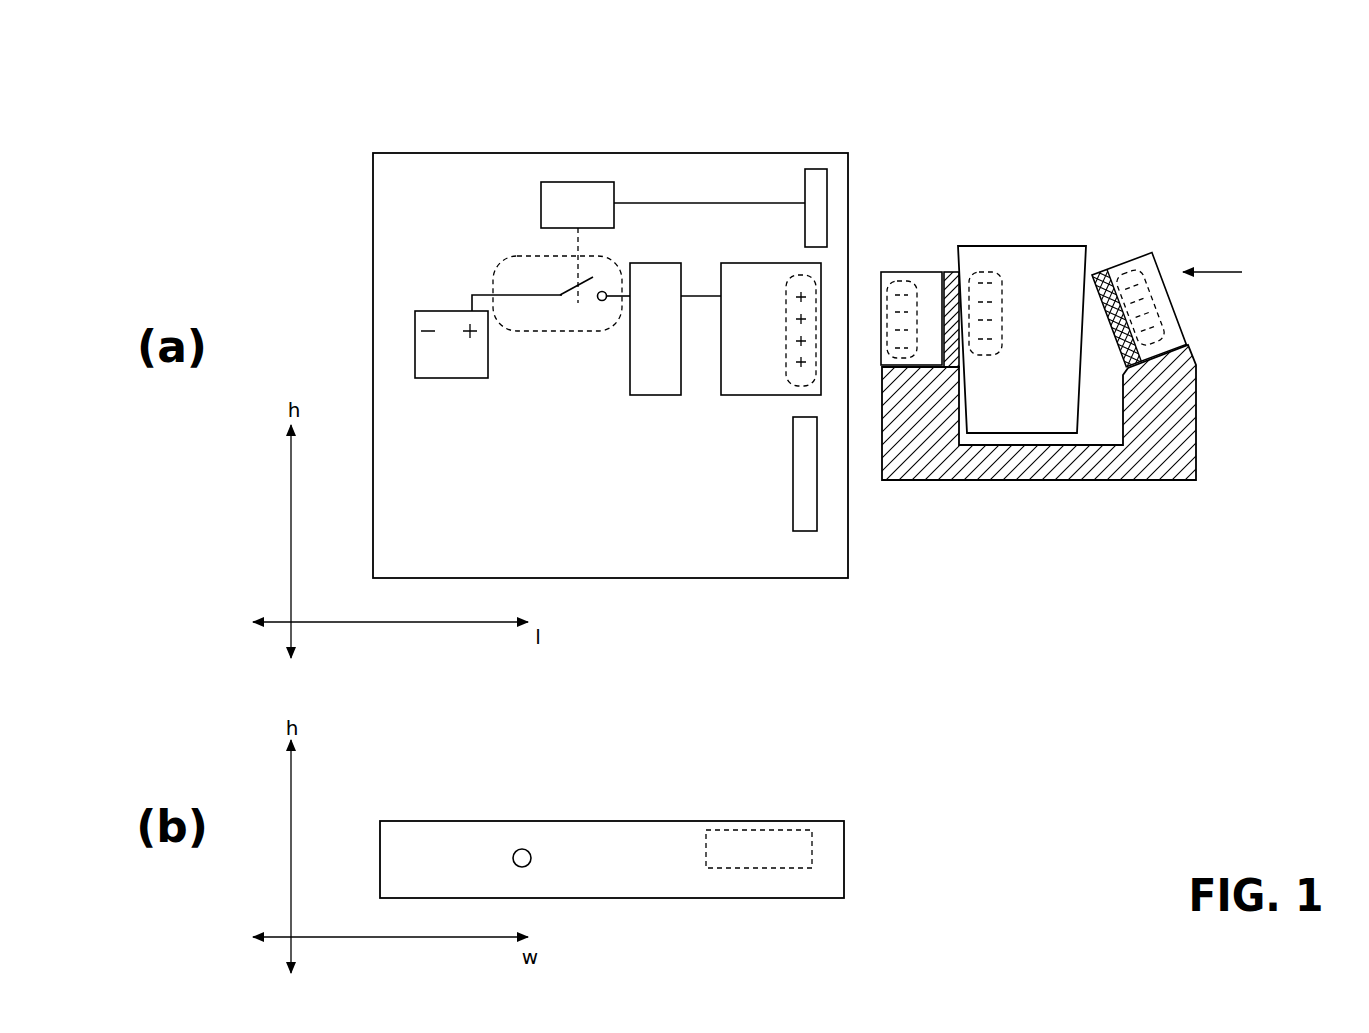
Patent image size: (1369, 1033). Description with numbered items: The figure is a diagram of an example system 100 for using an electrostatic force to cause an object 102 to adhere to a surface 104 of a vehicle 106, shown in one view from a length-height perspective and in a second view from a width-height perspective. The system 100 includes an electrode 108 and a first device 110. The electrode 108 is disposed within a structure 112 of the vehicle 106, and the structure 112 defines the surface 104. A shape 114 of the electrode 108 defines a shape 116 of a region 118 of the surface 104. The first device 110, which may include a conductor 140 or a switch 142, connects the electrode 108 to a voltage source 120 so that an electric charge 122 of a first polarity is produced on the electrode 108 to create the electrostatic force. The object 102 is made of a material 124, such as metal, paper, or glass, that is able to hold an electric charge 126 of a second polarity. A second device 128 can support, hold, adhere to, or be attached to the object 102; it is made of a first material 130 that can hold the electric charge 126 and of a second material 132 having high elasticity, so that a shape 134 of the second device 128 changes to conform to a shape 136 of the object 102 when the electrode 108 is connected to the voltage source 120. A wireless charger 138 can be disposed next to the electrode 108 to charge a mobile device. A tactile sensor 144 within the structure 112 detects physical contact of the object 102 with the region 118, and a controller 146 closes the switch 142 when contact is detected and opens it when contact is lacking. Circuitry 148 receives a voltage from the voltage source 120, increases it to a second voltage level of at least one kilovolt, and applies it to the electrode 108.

The system 100 is at (328, 130).
The object 102 is at (1023, 273).
The surface 104 is at (730, 152).
The vehicle 106 is at (1200, 140).
The electrode 108 is at (757, 379).
The first device 110 is at (518, 256).
The structure 112 is at (610, 540).
The shape of the electrode 114 is at (738, 383).
The shape of the region 116 is at (766, 812).
The region 118 is at (740, 828).
The voltage source 120 is at (450, 378).
The electric charge 122 is at (796, 268).
The material 124 is at (1023, 273).
The electric charge 126 is at (898, 272).
The second device 128 is at (940, 482).
The first material 130 is at (922, 272).
The second material 132 is at (1183, 410).
The shape of the second device 134 is at (1187, 440).
The shape of the object 136 is at (1043, 257).
The wireless charger 138 is at (803, 522).
The conductor 140 is at (550, 297).
The switch 142 is at (573, 290).
The tactile sensor 144 is at (815, 178).
The controller 146 is at (565, 188).
The circuitry 148 is at (645, 383).